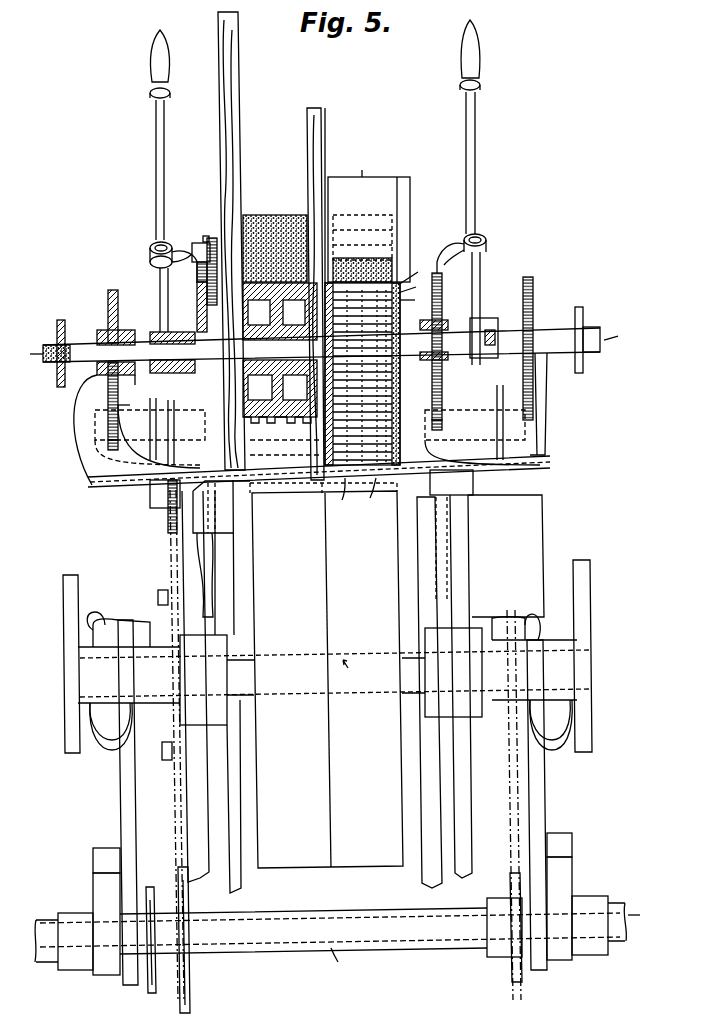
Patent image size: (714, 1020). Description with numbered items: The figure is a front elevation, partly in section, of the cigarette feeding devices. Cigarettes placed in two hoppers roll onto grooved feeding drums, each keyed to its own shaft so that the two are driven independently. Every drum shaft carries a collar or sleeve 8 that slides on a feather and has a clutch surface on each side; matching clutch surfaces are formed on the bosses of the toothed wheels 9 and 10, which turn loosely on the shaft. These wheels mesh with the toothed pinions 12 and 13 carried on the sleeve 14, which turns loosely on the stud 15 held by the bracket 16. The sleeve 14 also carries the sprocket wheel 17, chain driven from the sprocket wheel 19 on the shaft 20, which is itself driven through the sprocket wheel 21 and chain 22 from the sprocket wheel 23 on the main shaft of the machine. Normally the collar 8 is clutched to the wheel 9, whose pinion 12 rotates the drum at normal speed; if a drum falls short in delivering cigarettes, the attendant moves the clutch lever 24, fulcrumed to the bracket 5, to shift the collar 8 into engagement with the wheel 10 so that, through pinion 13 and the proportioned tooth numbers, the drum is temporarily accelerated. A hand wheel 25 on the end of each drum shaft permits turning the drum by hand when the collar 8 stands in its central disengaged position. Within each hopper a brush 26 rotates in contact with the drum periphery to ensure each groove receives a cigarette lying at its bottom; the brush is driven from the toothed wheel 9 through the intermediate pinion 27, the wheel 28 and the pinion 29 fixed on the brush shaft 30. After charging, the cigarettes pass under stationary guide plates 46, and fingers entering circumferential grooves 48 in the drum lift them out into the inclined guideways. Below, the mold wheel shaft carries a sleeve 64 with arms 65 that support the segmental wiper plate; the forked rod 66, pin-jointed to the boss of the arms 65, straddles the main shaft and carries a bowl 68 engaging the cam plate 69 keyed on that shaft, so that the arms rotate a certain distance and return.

The bracket 5 is at (180, 248).
The collar or sleeve 8 is at (153, 333).
The toothed wheel 9 is at (199, 305).
The toothed wheel 10 is at (113, 290).
The toothed pinion 12 is at (455, 408).
The toothed pinion 13 is at (100, 432).
The sleeve 14 is at (98, 407).
The stud 15 is at (310, 425).
The bracket 16 is at (440, 428).
The sprocket wheel 17 is at (150, 402).
The sprocket wheel 19 is at (150, 458).
The shaft 20 is at (266, 444).
The sprocket wheel 21 is at (172, 403).
The chain 22 is at (170, 562).
The sprocket wheel 23 is at (185, 905).
The clutch lever 24 is at (156, 132).
The hand wheel 25 is at (61, 322).
The brush 26 is at (272, 213).
The intermediate pinion 27 is at (198, 278).
The wheel 28 is at (196, 262).
The pinion 29 is at (204, 238).
The shaft 30 is at (150, 246).
The stationary guide plate 46 is at (326, 310).
The circumferential groove 48 is at (270, 418).
The sleeve 64 is at (82, 700).
The arm 65 is at (125, 630).
The forked rod 66 is at (120, 782).
The bowl 68 is at (95, 860).
The cam plate 69 is at (105, 903).